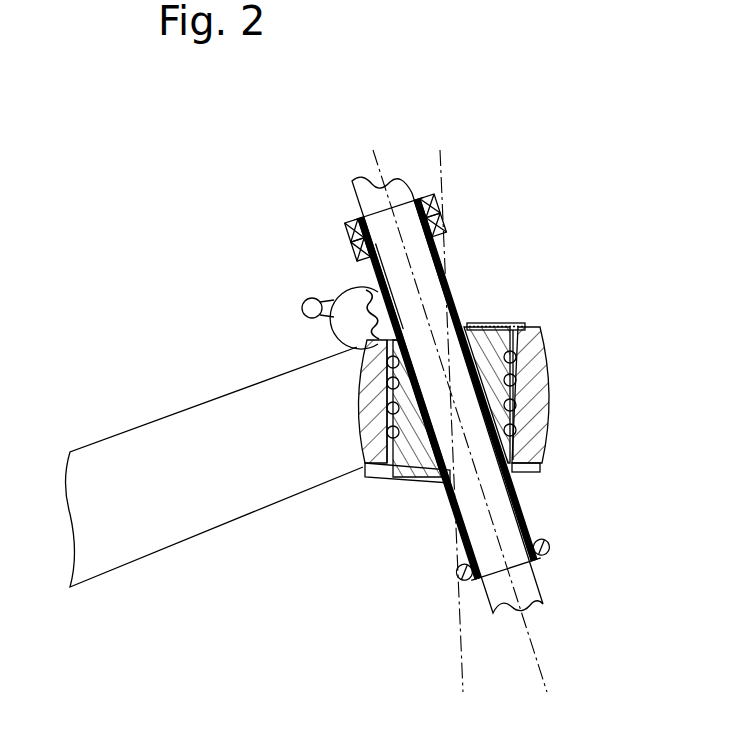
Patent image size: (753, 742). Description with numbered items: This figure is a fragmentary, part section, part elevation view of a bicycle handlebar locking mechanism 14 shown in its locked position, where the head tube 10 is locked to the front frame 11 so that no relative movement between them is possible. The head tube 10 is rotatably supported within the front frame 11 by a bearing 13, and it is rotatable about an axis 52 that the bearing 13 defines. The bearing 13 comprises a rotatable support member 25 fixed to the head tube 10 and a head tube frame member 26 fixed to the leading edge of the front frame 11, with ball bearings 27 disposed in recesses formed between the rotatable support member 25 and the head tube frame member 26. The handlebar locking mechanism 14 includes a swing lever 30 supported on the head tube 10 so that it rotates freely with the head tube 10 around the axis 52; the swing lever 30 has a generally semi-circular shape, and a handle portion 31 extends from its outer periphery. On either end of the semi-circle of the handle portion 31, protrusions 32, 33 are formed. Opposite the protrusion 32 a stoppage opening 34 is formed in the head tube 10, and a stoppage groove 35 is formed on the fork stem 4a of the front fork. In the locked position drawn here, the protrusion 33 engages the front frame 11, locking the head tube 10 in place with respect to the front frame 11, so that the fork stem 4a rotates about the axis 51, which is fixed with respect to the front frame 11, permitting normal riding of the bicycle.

The fork stem 4a is at (543, 594).
The head tube 10 is at (458, 305).
The front frame 11 is at (308, 472).
The bearing 13 is at (527, 376).
The ball joint 14 is at (284, 247).
The rotatable support member 25 is at (507, 320).
The head tube frame member 26 is at (537, 440).
The ball bearings 27 is at (512, 405).
The swing lever 30 is at (337, 292).
The handle portion 31 is at (305, 304).
The protrusion 32 is at (352, 283).
The protrusion 33 is at (340, 350).
The stoppage opening 34 is at (442, 242).
The stoppage groove 35 is at (390, 280).
The axis 51 is at (543, 668).
The axis 52 is at (460, 660).